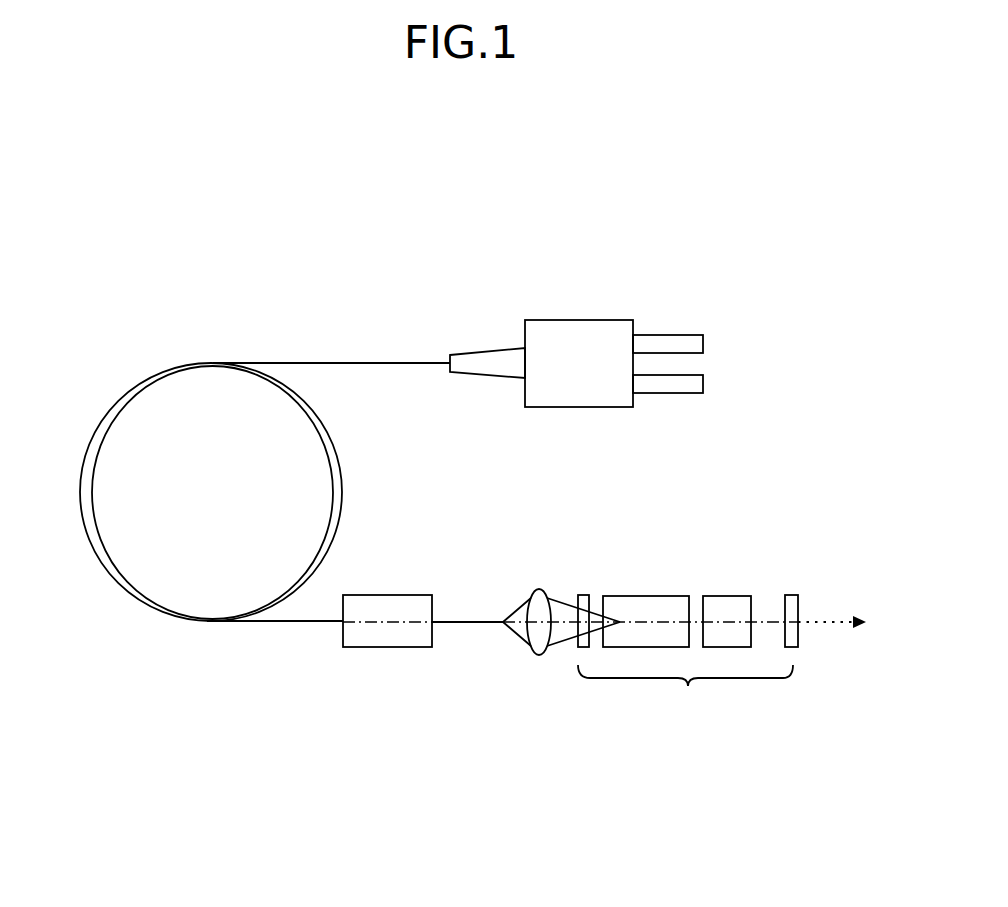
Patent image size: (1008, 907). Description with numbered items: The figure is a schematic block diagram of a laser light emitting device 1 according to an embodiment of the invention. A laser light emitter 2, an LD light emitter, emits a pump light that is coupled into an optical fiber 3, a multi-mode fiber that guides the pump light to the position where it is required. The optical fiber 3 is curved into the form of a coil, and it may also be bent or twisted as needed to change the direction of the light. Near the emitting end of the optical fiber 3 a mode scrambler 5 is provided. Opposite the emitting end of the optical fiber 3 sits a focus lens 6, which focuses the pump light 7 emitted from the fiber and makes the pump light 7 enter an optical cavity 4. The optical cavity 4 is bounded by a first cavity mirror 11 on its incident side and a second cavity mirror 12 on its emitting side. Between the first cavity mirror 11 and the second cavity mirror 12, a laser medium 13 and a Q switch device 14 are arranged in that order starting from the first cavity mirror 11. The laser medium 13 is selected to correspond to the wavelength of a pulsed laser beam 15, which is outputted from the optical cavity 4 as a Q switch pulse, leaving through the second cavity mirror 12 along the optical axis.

The laser light emitting device 1 is at (65, 366).
The laser light emitter 2 is at (585, 320).
The optical fiber 3 is at (368, 363).
The optical cavity 4 is at (688, 686).
The mode scrambler 5 is at (393, 594).
The focus lens 6 is at (540, 589).
The pump light 7 is at (518, 632).
The first cavity mirror 11 is at (577, 643).
The second cavity mirror 12 is at (798, 648).
The laser medium 13 is at (633, 596).
The Q switch device 14 is at (723, 596).
The pulsed laser beam 15 is at (828, 618).